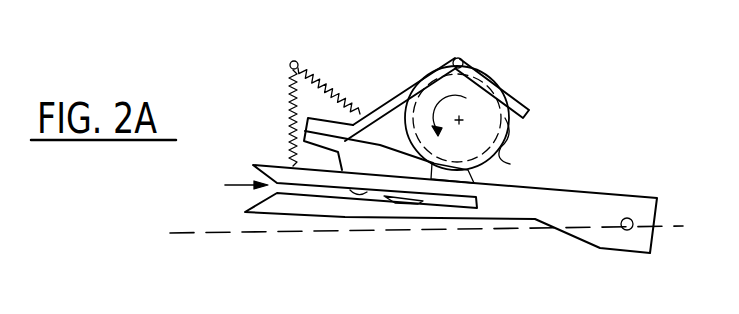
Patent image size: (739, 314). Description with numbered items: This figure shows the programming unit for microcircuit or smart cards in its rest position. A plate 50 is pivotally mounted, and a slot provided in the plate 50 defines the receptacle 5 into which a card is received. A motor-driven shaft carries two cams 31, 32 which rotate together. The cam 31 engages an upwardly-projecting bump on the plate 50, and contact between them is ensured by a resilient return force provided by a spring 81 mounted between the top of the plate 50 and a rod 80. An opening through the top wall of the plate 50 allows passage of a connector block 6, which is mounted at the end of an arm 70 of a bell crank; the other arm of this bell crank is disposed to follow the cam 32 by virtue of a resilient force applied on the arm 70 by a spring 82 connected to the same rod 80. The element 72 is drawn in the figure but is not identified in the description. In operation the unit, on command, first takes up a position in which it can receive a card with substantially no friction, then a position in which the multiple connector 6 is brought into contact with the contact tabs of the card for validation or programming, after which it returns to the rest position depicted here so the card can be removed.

The receptacle 5 is at (238, 180).
The connector block 6 is at (375, 158).
The cam 31 is at (483, 108).
The cam 32 is at (510, 164).
The plate 50 is at (575, 200).
The arm 70 is at (397, 99).
The lever arm 72 is at (523, 102).
The rod 80 is at (297, 59).
The spring 81 is at (289, 110).
The spring 82 is at (343, 97).